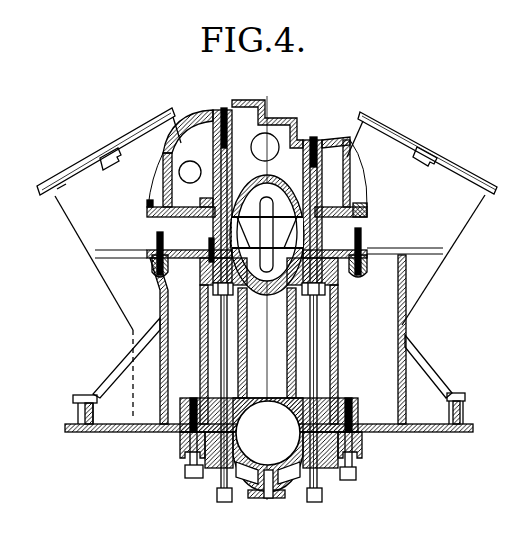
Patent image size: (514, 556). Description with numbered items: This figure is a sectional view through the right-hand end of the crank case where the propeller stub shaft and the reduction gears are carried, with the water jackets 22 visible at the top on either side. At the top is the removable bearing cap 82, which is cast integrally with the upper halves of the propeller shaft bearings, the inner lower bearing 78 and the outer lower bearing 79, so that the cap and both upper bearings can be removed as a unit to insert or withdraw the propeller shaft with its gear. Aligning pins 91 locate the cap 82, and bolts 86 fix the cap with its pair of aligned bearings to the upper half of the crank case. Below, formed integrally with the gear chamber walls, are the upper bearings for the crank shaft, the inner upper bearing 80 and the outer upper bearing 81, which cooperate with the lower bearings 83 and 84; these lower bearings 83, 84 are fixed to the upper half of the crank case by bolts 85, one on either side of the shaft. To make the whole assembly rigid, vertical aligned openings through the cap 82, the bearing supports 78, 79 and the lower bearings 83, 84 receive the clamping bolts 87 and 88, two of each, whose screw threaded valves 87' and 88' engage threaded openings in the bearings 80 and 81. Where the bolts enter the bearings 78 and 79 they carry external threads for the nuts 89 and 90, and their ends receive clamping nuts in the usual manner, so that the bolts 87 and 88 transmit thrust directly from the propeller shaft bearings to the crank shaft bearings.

The jackets 22 is at (445, 175).
The inner lower bearing 78 is at (367, 270).
The outer lower bearing 79 is at (232, 275).
The inner upper bearing 80 is at (302, 403).
The outer upper bearing 81 is at (240, 385).
The bearing cap 82 is at (258, 102).
The lower bearing 83 is at (327, 473).
The lower bearing 84 is at (213, 472).
The bolts 85 is at (192, 452).
The bolts 86 is at (158, 232).
The clamping bolt 87 is at (335, 287).
The screw threaded valve 87' is at (373, 436).
The clamping bolt 88 is at (224, 274).
The screw threaded valve 88' is at (158, 435).
The nut 89 is at (228, 300).
The nut 90 is at (330, 298).
The aligning pins 91 is at (211, 242).